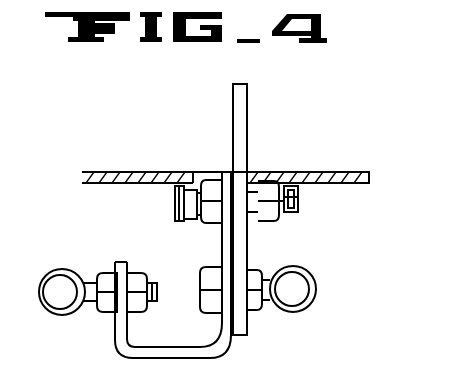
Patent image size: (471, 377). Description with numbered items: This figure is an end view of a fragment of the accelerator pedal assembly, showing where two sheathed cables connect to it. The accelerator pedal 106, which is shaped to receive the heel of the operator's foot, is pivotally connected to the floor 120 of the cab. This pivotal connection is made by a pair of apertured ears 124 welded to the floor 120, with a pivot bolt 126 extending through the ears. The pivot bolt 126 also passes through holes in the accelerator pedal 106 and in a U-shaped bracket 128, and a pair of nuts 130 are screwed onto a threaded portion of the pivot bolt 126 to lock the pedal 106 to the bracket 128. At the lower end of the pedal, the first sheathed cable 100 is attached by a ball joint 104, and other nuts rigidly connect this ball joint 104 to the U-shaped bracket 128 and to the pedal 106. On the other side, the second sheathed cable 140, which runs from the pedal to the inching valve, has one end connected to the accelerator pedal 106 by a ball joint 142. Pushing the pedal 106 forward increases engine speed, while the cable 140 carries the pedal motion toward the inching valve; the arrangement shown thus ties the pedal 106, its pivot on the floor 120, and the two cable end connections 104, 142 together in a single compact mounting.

The first sheathed cable 100 is at (58, 300).
The ball joint 104 is at (73, 257).
The accelerator pedal 106 is at (242, 107).
The floor 120 is at (101, 170).
The apertured ears 124 is at (175, 222).
The pivot bolt 126 is at (297, 201).
The U-shaped bracket 128 is at (222, 245).
The nuts 130 is at (221, 172).
The second sheathed cable 140 is at (293, 302).
The ball joint 142 is at (312, 270).